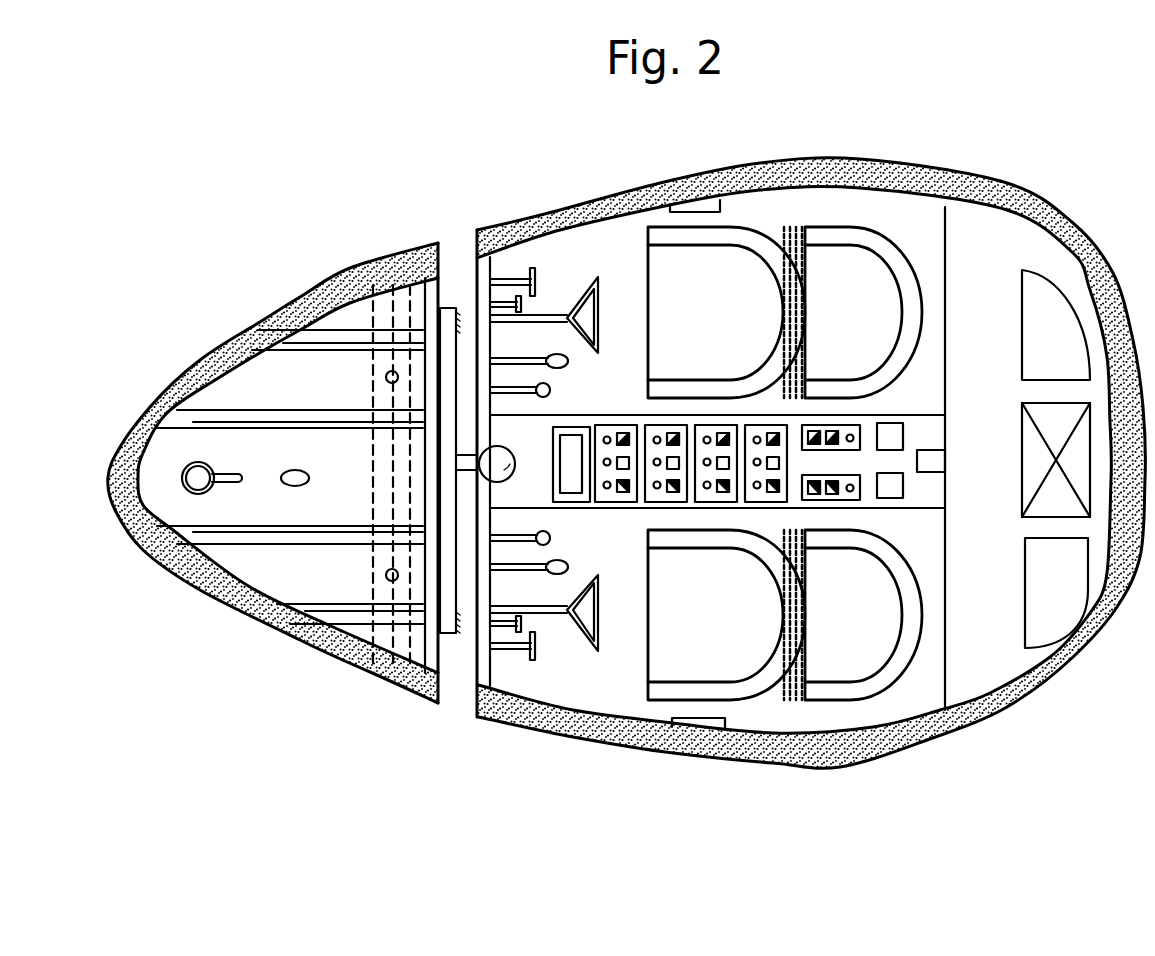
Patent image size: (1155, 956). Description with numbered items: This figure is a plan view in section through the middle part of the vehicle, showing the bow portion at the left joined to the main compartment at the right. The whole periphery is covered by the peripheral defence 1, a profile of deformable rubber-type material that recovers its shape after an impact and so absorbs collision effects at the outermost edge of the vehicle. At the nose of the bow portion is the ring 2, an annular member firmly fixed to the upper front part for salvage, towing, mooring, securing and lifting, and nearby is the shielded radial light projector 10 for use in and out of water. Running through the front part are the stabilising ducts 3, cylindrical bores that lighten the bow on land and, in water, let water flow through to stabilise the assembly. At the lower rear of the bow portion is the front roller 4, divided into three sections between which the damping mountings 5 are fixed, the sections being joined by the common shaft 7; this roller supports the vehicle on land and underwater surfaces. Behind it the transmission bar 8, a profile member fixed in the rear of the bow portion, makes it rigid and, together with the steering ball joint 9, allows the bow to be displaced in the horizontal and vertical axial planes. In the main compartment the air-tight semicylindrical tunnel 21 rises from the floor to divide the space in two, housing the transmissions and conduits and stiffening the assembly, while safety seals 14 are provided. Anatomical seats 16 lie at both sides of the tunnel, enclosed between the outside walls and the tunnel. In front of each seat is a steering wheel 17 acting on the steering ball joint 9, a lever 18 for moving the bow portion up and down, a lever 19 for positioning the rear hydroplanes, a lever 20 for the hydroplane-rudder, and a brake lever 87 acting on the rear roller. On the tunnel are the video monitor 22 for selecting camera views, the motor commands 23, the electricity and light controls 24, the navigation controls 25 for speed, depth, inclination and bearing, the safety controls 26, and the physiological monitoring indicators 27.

The peripheral defence 1 is at (185, 567).
The ring 2 is at (182, 478).
The stabilising ducts 3 is at (288, 413).
The front roller 4 is at (374, 303).
The mountings 5 is at (387, 582).
The shaft of the roller 7 is at (402, 300).
The transmission bar 8 is at (450, 633).
The steering ball joint 9 is at (505, 478).
The radial light projector 10 is at (305, 476).
The safety seals 14 is at (692, 208).
The anatomical seats 16 is at (840, 255).
The steering wheel 17 is at (598, 647).
The lever for moving the bow portion 18 is at (527, 662).
The lever for positioning the rear hydroplanes 19 is at (510, 393).
The lever for positioning and operating the hydroplane-rudder 20 is at (538, 360).
The air-tight semicylindrical tunnel 21 is at (923, 497).
The video monitor 22 is at (577, 485).
The commands and controls for the motor 23 is at (625, 497).
The commands and controls for electricity and lights 24 is at (647, 433).
The commands and controls for navigation 25 is at (710, 427).
The safety controls and commands 26 is at (778, 437).
The controls and indicators for physiological monitoring 27 is at (860, 427).
The lever for the brake 87 is at (507, 632).